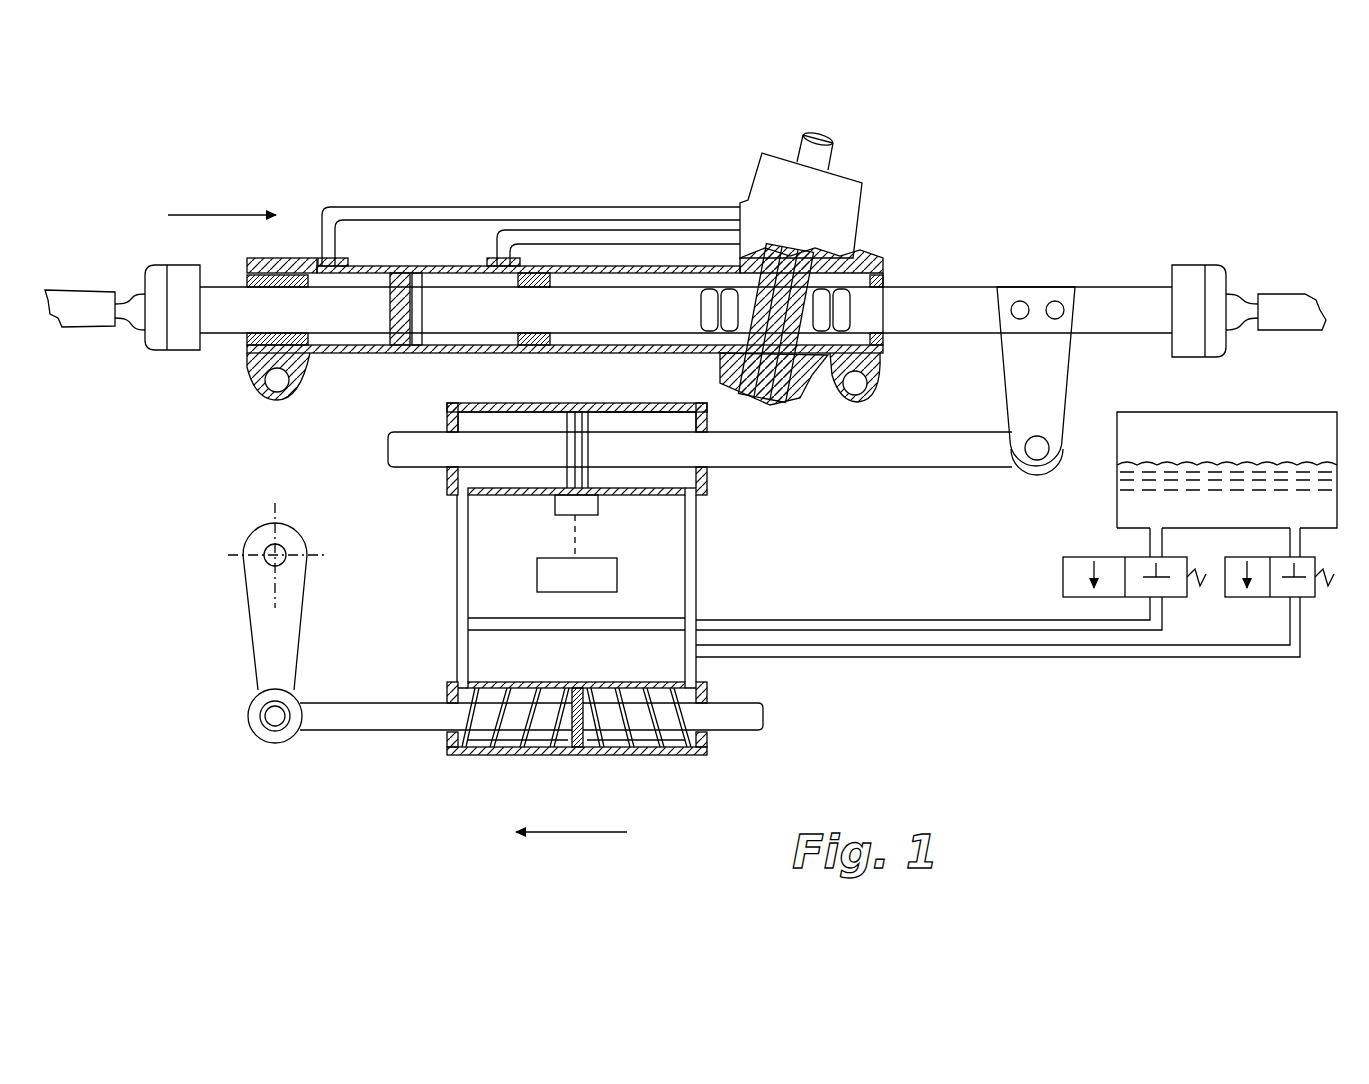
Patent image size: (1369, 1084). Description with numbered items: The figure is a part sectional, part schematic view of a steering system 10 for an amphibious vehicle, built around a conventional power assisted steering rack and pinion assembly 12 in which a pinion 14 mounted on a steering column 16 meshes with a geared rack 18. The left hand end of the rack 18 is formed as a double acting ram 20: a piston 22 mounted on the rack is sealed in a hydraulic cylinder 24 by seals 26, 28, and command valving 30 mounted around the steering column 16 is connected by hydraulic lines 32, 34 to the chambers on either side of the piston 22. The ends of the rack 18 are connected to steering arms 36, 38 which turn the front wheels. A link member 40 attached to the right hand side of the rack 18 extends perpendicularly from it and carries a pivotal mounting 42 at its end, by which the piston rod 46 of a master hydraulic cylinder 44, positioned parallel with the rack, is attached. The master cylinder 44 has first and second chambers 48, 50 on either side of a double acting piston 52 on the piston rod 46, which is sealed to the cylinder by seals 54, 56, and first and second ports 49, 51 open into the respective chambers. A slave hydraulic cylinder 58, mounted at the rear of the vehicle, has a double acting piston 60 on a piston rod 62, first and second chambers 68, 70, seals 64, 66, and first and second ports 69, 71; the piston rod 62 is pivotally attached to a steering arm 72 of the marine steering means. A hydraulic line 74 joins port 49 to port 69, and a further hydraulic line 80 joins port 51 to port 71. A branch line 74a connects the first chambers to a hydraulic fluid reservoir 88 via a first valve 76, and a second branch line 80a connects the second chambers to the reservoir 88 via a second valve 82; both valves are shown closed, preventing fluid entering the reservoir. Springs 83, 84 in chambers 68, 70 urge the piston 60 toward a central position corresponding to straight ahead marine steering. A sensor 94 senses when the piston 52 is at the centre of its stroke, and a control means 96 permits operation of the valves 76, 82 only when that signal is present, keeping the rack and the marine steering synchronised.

The steering system 10 is at (903, 707).
The power assisted steering rack and pinion assembly 12 is at (872, 262).
The pinion 14 is at (790, 330).
The steering column 16 is at (830, 158).
The geared rack 18 is at (835, 308).
The double acting ram 20 is at (465, 296).
The piston 22 is at (392, 280).
The hydraulic cylinder 24 is at (348, 353).
The seal 26 is at (245, 348).
The seal 28 is at (535, 338).
The command valving 30 is at (775, 190).
The hydraulic line 32 is at (552, 213).
The hydraulic line 34 is at (610, 235).
The steering arm 36 is at (86, 302).
The steering arm 38 is at (1282, 305).
The link member 40 is at (1050, 372).
The pivotal mounting 42 is at (1037, 460).
The master hydraulic cylinder 44 is at (710, 410).
The piston rod 46 is at (918, 452).
The first chamber 48 is at (480, 420).
The first port 49 is at (470, 490).
The second chamber 50 is at (655, 418).
The second port 51 is at (690, 490).
The double acting piston 52 is at (577, 405).
The seal 54 is at (443, 478).
The seal 56 is at (710, 475).
The slave hydraulic cylinder 58 is at (470, 755).
The double acting piston 60 is at (577, 748).
The piston rod 62 is at (355, 720).
The seal 64 is at (447, 745).
The seal 66 is at (705, 745).
The first chamber 68 is at (520, 700).
The first port 69 is at (457, 682).
The second chamber 70 is at (635, 700).
The second port 71 is at (702, 690).
The steering arm 72 is at (260, 640).
The hydraulic line 74 is at (457, 575).
The branch line 74a is at (850, 618).
The first valve 76 is at (1062, 577).
The hydraulic line 80 is at (697, 577).
The second branch line 80a is at (1080, 657).
The second valve 82 is at (1310, 598).
The spring 83 is at (525, 740).
The spring 84 is at (650, 740).
The hydraulic fluid reservoir 88 is at (1252, 410).
The sensor 94 is at (592, 505).
The control means 96 is at (608, 577).